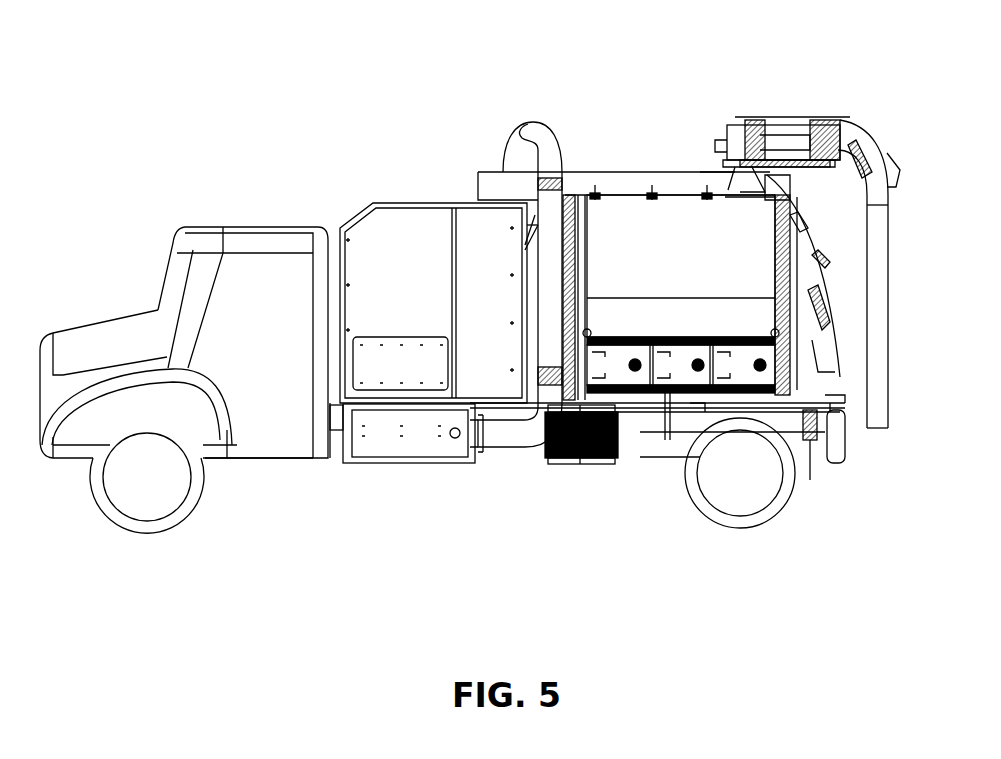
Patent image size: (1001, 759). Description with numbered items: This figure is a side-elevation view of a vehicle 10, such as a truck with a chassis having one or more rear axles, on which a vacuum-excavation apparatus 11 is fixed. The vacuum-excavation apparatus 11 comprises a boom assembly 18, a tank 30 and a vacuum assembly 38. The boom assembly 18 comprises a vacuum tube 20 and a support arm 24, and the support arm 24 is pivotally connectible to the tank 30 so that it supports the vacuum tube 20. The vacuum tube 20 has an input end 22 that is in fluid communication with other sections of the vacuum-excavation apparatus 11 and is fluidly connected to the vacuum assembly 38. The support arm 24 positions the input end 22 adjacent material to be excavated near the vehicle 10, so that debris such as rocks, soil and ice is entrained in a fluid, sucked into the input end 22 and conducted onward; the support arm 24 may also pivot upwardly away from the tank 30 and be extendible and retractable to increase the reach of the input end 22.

The vehicle 10 is at (73, 122).
The vacuum-excavation apparatus 11 is at (468, 192).
The boom assembly 18 is at (857, 118).
The vacuum tube 20 is at (888, 268).
The input end 22 is at (887, 428).
The support arm 24 is at (772, 122).
The tank 30 is at (818, 240).
The vacuum assembly 38 is at (425, 472).